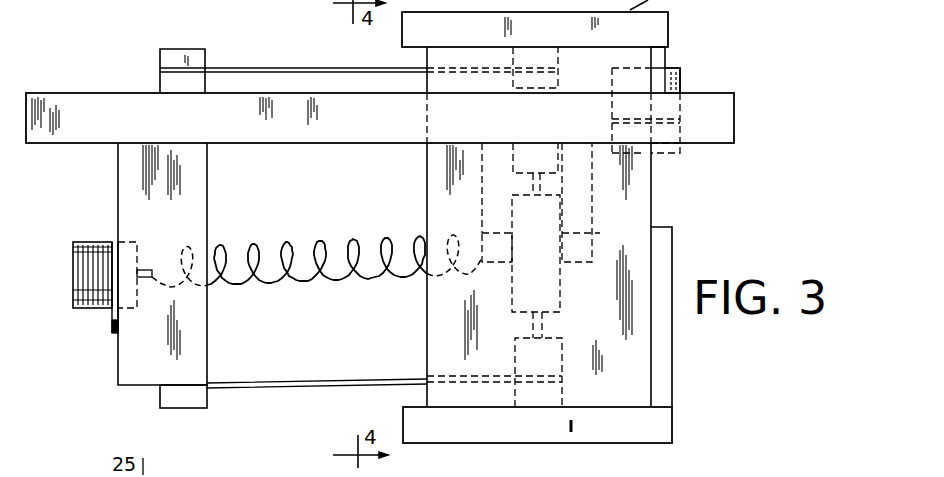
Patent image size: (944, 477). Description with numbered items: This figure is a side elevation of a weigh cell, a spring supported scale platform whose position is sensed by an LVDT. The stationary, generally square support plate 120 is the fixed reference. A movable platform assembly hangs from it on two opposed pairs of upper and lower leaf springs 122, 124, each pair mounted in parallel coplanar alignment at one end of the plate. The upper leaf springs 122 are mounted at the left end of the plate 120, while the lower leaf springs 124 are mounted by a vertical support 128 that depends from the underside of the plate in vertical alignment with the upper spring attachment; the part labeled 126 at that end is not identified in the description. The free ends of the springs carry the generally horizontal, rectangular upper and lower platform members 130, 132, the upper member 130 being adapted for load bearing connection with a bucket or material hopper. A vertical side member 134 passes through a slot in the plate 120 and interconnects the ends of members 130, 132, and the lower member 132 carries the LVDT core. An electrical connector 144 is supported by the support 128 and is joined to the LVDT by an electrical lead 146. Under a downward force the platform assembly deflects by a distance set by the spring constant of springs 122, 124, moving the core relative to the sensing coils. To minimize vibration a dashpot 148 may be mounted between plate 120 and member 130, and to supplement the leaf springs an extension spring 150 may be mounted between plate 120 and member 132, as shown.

The support plate 120 is at (722, 118).
The upper leaf springs 122 is at (275, 68).
The lower leaf springs 124 is at (283, 383).
The rod support block 126 is at (160, 52).
The vertical support 128 is at (124, 183).
The upper platform member 130 is at (670, 29).
The lower platform member 132 is at (664, 425).
The vertical side member 134 is at (602, 335).
The electrical connector 144 is at (82, 310).
The electrical lead 146 is at (305, 278).
The dashpot 148 is at (678, 79).
The spring anchor 150 is at (510, 275).